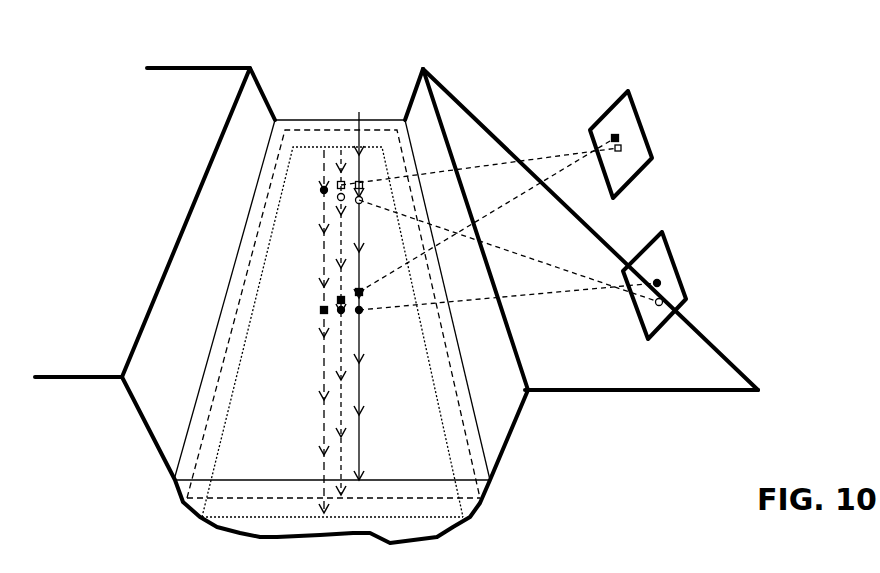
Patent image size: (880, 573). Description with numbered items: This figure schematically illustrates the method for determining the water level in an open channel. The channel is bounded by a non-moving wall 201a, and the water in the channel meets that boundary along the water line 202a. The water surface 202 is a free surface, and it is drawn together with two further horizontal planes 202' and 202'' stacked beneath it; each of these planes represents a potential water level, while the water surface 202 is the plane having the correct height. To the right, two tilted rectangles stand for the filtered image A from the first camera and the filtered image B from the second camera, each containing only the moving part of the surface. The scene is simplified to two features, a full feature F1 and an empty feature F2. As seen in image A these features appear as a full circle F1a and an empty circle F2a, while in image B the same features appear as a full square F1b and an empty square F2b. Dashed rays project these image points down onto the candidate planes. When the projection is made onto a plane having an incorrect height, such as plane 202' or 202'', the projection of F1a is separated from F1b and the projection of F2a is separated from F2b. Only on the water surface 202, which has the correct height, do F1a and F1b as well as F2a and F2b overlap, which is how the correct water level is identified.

The wall 201a is at (157, 402).
The water line 202a is at (187, 485).
The water surface 202 is at (332, 463).
The horizontal plane 202' is at (368, 512).
The horizontal plane 202'' is at (371, 492).
The full feature F1 is at (321, 308).
The empty feature F2 is at (321, 188).
The full circle F1a is at (660, 280).
The empty circle F2a is at (661, 305).
The full square F1b is at (618, 135).
The empty square F2b is at (620, 150).
The filtered image A is at (668, 285).
The filtered image B is at (635, 144).